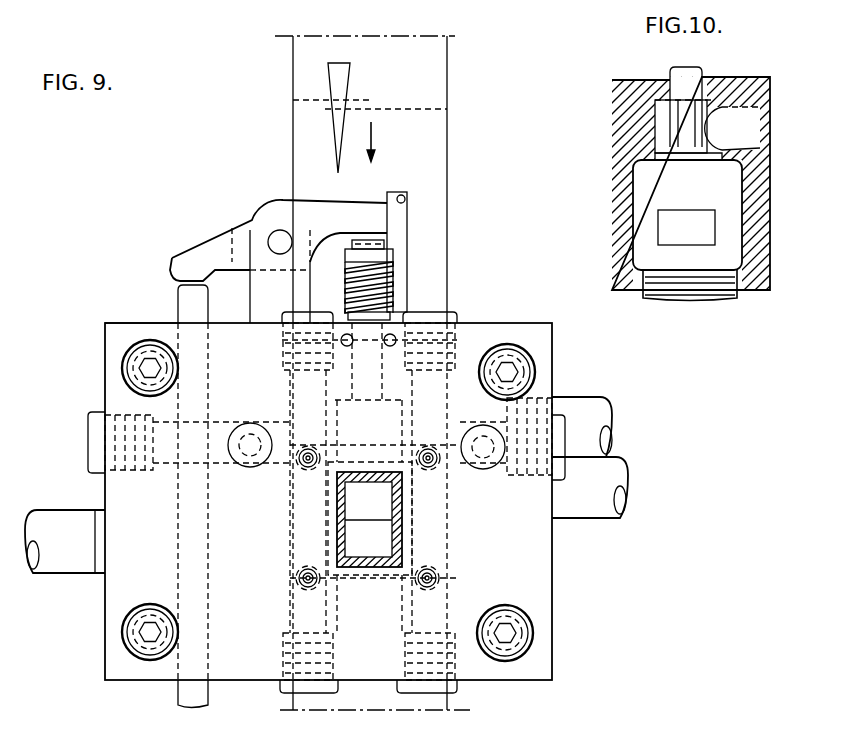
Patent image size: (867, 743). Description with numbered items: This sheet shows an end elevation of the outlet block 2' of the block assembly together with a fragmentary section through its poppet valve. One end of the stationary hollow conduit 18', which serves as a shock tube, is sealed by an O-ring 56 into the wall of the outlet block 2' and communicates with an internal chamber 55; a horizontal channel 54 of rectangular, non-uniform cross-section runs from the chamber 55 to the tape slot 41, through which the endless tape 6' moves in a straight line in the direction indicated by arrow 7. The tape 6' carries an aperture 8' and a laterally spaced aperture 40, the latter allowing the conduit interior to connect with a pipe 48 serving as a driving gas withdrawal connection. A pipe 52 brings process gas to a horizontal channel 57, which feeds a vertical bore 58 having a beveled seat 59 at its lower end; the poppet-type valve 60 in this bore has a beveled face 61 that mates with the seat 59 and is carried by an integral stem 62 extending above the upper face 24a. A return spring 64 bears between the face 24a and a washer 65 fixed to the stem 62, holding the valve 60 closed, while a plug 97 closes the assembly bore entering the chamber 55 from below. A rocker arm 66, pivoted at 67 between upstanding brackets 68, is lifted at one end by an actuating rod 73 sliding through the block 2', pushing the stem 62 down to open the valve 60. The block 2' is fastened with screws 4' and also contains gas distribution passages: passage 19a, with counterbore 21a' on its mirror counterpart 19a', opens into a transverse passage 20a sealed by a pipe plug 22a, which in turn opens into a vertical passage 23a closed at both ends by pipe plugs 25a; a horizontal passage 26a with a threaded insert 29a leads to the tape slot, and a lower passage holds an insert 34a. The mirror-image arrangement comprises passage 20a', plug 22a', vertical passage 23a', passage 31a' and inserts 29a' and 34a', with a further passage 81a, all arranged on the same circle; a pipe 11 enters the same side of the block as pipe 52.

In FIG. 9, the outlet block 2' is at (298, 494).
In FIG. 10, the outlet block 2' is at (629, 183).
In FIG. 9, the socket head cap screws 4' is at (336, 500).
In FIG. 9, the tape 6' is at (385, 373).
In FIG. 9, the direction of motion arrow 7 is at (371, 130).
In FIG. 9, the aperture 8' is at (408, 240).
In FIG. 9, the pipe 11 is at (612, 518).
In FIG. 9, the hollow conduit 18' is at (363, 519).
In FIG. 9, the cylindrical passage 19a is at (514, 482).
In FIG. 9, the cylindrical passage 19a' is at (229, 482).
In FIG. 9, the cylindrical passage 20a is at (483, 436).
In FIG. 9, the cylindrical passage 20a' is at (209, 460).
In FIG. 9, the counterbore 21a' is at (242, 430).
In FIG. 9, the pipe plug 22a is at (560, 443).
In FIG. 9, the pipe plug 22a' is at (90, 442).
In FIG. 9, the vertical passage 23a is at (478, 603).
In FIG. 9, the vertical passage 23a' is at (268, 547).
In FIG. 9, the upper face 24a is at (118, 323).
In FIG. 9, the pipe plugs 25a is at (282, 318).
In FIG. 9, the cylindrical passage 26a is at (310, 447).
In FIG. 9, the threaded insert 29a is at (465, 483).
In FIG. 9, the threaded insert 29a' is at (276, 482).
In FIG. 9, the cylindrical passage 31a' is at (281, 574).
In FIG. 9, the threaded insert 34a is at (474, 580).
In FIG. 9, the threaded insert 34a' is at (274, 585).
In FIG. 9, the aperture 40 is at (345, 76).
In FIG. 9, the slot 41 is at (290, 617).
In FIG. 9, the pipe 48 is at (40, 515).
In FIG. 9, the pipe 52 is at (600, 402).
In FIG. 9, the channel 54 is at (376, 552).
In FIG. 10, the channel 54 is at (710, 228).
In FIG. 9, the chamber 55 is at (420, 530).
In FIG. 10, the chamber 55 is at (638, 258).
In FIG. 9, the O-ring 56 is at (372, 585).
In FIG. 9, the channel 57 is at (442, 408).
In FIG. 10, the channel 57 is at (745, 146).
In FIG. 9, the cylindrical bore 58 is at (360, 400).
In FIG. 10, the cylindrical bore 58 is at (660, 118).
In FIG. 10, the valve seat 59 is at (652, 168).
In FIG. 9, the poppet-type valve 60 is at (345, 285).
In FIG. 10, the poppet-type valve 60 is at (704, 68).
In FIG. 10, the beveled face 61 is at (728, 145).
In FIG. 9, the stem 62 is at (395, 292).
In FIG. 10, the stem 62 is at (674, 68).
In FIG. 9, the return spring 64 is at (395, 272).
In FIG. 9, the washer 65 is at (386, 250).
In FIG. 9, the rocker arm 66 is at (343, 212).
In FIG. 9, the pivot 67 is at (280, 242).
In FIG. 9, the brackets 68 is at (257, 285).
In FIG. 9, the actuating rod 73 is at (178, 308).
In FIG. 9, the passage 81a is at (440, 566).
In FIG. 10, the plug 97 is at (680, 292).